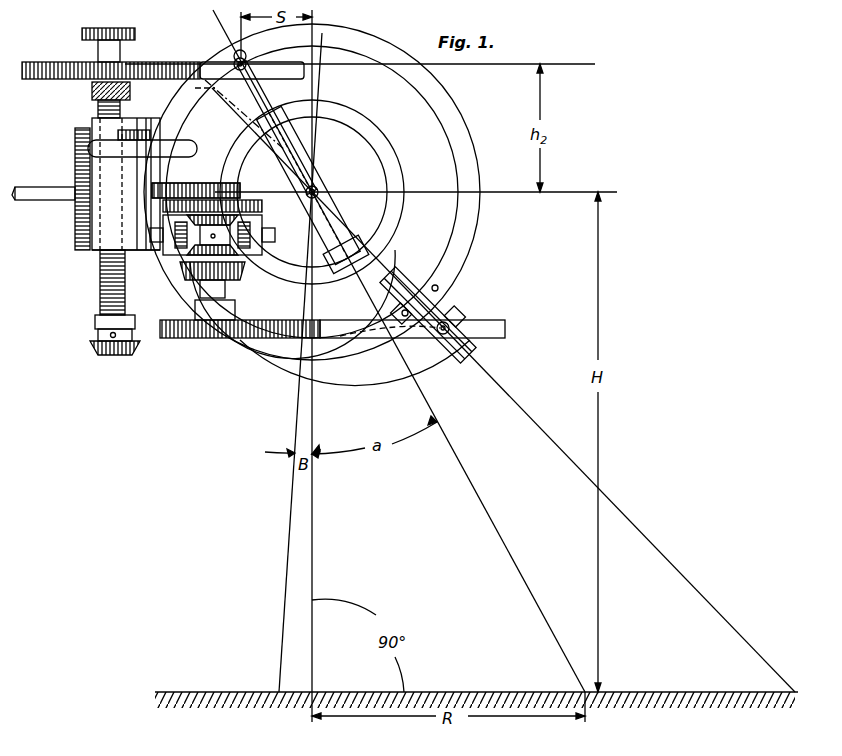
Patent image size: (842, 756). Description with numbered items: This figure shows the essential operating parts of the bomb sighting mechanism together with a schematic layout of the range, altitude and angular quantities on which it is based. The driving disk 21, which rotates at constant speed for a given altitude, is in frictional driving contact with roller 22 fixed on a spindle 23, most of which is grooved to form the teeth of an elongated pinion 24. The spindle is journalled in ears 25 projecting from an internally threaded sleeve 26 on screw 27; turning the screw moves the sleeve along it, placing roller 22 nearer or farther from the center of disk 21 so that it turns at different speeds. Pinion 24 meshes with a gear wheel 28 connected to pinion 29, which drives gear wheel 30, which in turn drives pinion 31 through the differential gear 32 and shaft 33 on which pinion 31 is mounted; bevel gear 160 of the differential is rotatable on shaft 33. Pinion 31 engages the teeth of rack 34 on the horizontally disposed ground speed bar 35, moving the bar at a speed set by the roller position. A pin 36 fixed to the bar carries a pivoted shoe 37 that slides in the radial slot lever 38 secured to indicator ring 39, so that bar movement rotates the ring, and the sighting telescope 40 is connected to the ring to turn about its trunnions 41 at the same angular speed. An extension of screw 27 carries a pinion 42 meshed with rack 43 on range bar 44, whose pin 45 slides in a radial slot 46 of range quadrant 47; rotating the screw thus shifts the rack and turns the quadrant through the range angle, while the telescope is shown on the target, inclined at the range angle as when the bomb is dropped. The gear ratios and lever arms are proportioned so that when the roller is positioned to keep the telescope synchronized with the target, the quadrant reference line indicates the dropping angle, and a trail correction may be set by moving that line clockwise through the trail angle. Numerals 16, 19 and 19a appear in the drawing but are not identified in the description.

The bevel gear 16 is at (186, 256).
The bevel gear 160 is at (240, 270).
The line of sight 19 is at (217, 115).
The line 19a is at (199, 94).
The driving disk 21 is at (76, 164).
The roller 22 is at (192, 142).
The spindle 23 is at (150, 132).
The elongated pinion 24 is at (126, 210).
The ears 25 is at (135, 126).
The internally threaded sleeve 26 is at (105, 256).
The screw 27 is at (100, 296).
The gear wheel 28 is at (132, 348).
The pinion 29 is at (250, 212).
The gear wheel 30 is at (242, 193).
The pinion 31 is at (206, 340).
The differential gear 32 is at (250, 248).
The shaft 33 is at (226, 292).
The rack 34 is at (262, 324).
The ground speed bar 35 is at (360, 348).
The pin 36 is at (458, 318).
The shoe 37 is at (448, 320).
The radial slot lever 38 is at (413, 280).
The indicator ring 39 is at (478, 232).
The sighting telescope 40 is at (297, 147).
The trunnions 41 is at (320, 190).
The pinion 42 is at (122, 56).
The rack 43 is at (170, 63).
The range bar 44 is at (276, 76).
The pin 45 is at (240, 72).
The slot 46 is at (258, 100).
The range quadrant 47 is at (246, 52).